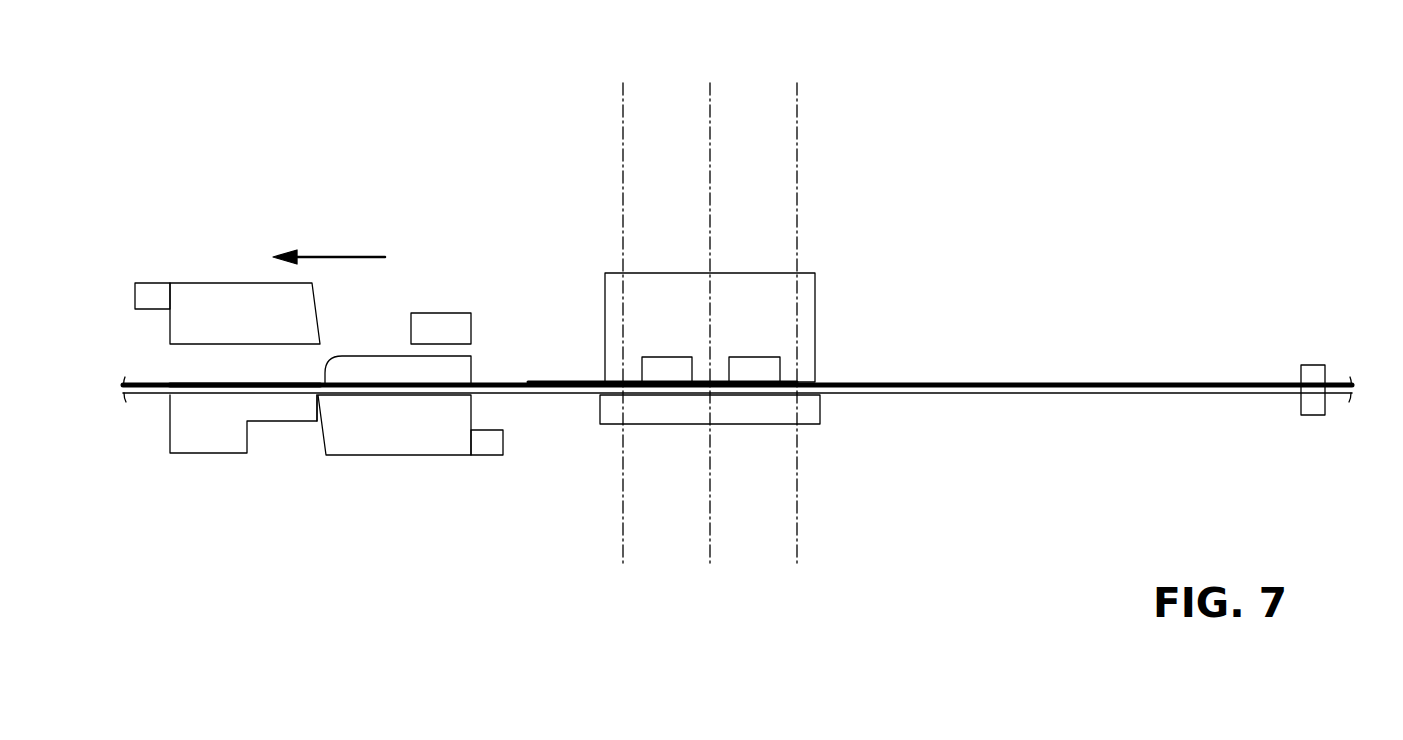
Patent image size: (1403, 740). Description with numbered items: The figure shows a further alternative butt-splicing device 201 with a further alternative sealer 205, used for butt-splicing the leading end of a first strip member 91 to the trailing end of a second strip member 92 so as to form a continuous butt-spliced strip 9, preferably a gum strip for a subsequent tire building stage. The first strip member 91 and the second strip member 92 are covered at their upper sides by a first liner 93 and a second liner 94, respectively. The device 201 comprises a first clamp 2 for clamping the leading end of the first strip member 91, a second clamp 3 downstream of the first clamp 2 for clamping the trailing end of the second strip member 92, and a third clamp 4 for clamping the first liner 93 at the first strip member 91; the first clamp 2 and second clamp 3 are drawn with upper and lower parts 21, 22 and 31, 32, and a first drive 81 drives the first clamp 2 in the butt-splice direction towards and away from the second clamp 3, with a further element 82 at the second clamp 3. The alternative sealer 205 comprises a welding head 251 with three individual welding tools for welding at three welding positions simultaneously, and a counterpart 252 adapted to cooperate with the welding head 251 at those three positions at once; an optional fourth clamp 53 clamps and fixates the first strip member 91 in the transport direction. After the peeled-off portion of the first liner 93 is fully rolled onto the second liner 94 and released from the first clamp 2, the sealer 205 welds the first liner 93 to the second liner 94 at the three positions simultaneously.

The further alternative device 201 is at (980, 135).
The further alternative sealer 205 is at (655, 185).
The first clamp 2 is at (367, 495).
The second clamp 3 is at (222, 495).
The third clamp 4 is at (432, 315).
The butt-spliced strip 9 is at (303, 397).
The upper conveyor part 21 is at (375, 370).
The lower conveyor part 22 is at (433, 440).
The upper conveyor part 31 is at (198, 293).
The lower conveyor part 32 is at (195, 440).
The fourth clamp 53 is at (1320, 368).
The first drive 81 is at (492, 440).
The sensor 82 is at (153, 292).
The first strip member 91 is at (1218, 394).
The second strip member 92 is at (752, 425).
The first liner 93 is at (535, 382).
The second liner 94 is at (213, 383).
The welding head 251 is at (810, 293).
The counterpart 252 is at (640, 425).